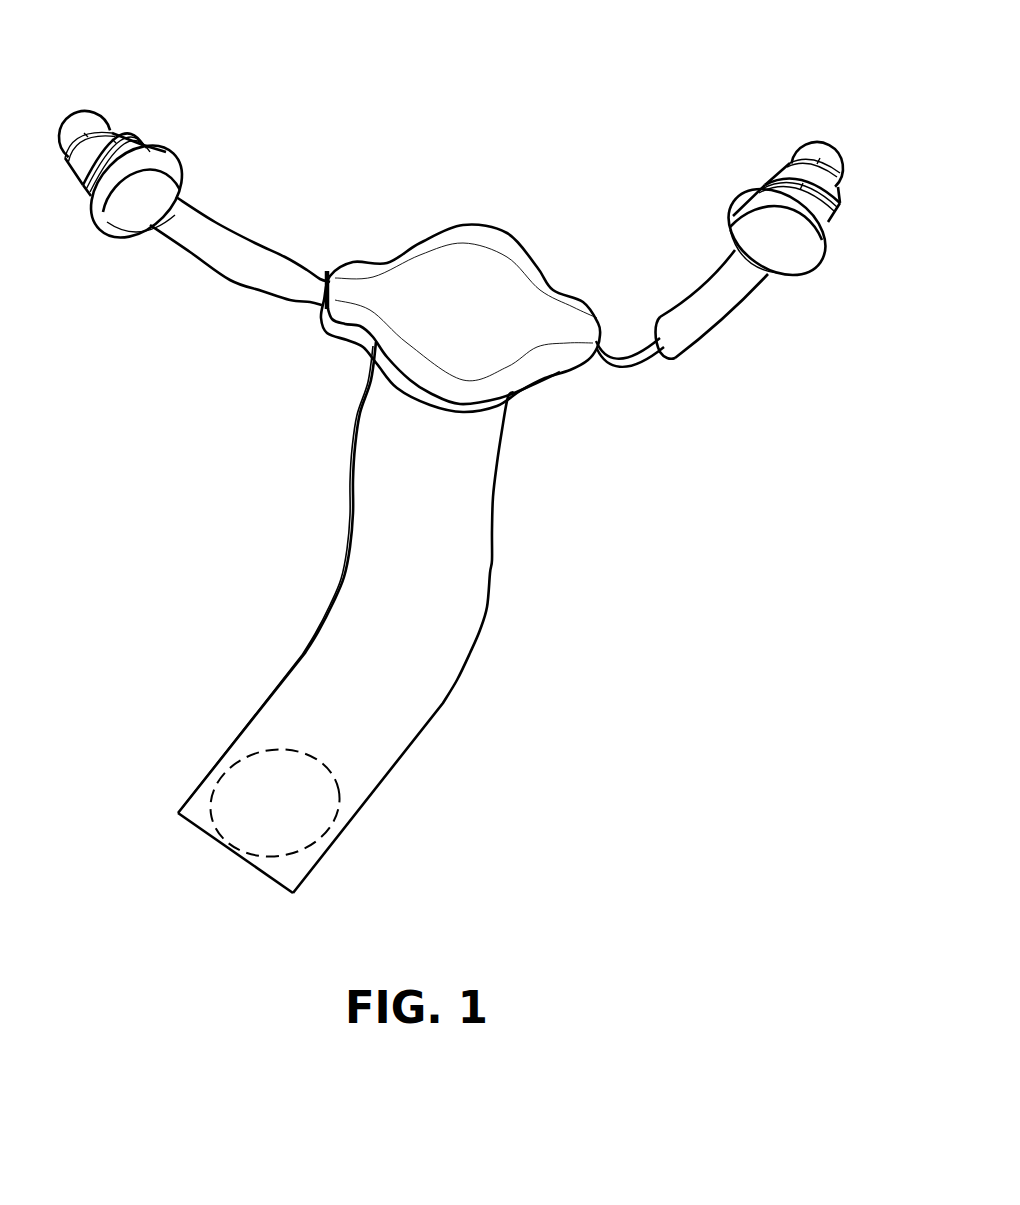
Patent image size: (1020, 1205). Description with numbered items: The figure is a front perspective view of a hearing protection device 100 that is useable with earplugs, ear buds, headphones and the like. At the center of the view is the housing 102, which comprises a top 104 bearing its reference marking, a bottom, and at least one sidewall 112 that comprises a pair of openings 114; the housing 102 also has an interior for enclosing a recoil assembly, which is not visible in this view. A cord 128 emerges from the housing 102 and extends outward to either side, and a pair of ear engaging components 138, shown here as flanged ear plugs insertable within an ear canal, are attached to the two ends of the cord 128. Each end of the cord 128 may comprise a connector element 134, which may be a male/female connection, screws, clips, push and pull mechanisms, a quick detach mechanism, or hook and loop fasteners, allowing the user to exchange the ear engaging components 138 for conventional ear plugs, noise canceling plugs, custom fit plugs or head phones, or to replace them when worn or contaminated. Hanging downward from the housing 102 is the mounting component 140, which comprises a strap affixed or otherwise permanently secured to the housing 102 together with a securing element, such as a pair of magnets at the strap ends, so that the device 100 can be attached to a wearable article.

The device 100 is at (528, 155).
The housing 102 is at (478, 287).
The top 104 is at (494, 317).
The sidewall 112 is at (365, 328).
The openings 114 is at (327, 278).
The cord 128 is at (230, 214).
The connector element 134 is at (139, 215).
The ear engaging components 138 is at (104, 96).
The mounting component 140 is at (492, 625).